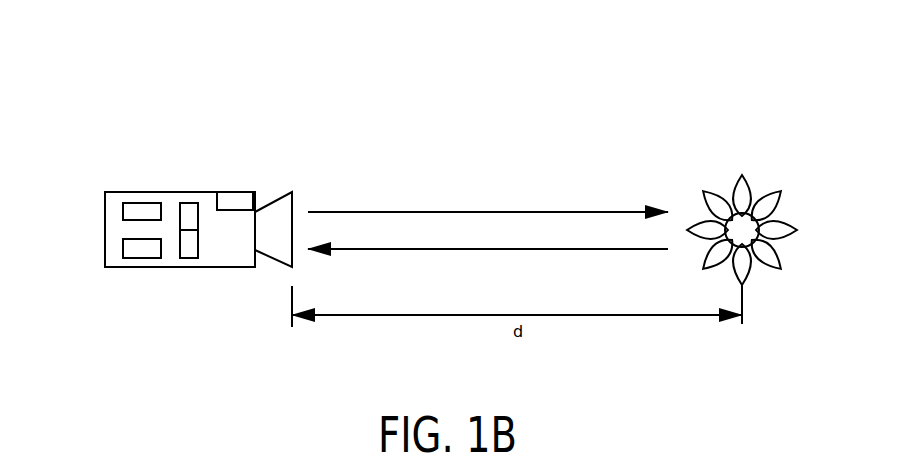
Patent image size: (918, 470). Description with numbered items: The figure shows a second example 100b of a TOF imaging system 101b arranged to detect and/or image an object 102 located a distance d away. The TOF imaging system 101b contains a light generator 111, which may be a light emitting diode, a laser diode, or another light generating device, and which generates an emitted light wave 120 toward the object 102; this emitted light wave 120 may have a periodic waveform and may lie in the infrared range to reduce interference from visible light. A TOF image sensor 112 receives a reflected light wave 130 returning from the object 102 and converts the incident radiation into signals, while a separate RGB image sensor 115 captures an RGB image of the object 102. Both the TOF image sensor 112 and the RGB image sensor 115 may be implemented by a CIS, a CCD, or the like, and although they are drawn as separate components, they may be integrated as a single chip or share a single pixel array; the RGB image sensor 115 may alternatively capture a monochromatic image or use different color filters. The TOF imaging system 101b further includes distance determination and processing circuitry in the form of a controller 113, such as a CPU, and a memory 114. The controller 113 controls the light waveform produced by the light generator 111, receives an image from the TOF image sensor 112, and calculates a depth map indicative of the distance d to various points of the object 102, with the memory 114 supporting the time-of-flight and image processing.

The second example 100b is at (123, 100).
The TOF imaging system 101b is at (105, 233).
The light generator 111 is at (235, 192).
The TOF image sensor 112 is at (198, 210).
The controller 113 is at (120, 203).
The memory 114 is at (142, 258).
The RGB image sensor 115 is at (198, 248).
The emitted light wave 120 is at (448, 210).
The reflected light wave 130 is at (572, 248).
The object 102 is at (780, 220).